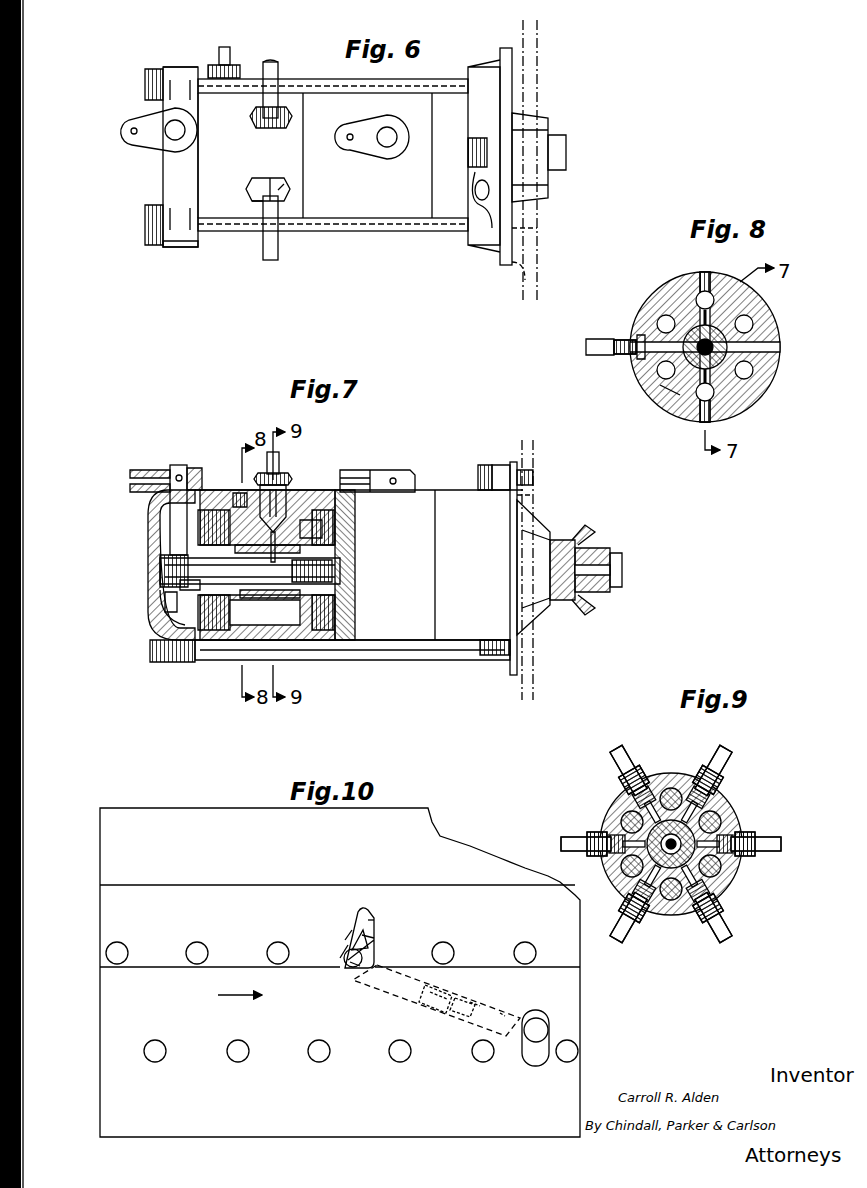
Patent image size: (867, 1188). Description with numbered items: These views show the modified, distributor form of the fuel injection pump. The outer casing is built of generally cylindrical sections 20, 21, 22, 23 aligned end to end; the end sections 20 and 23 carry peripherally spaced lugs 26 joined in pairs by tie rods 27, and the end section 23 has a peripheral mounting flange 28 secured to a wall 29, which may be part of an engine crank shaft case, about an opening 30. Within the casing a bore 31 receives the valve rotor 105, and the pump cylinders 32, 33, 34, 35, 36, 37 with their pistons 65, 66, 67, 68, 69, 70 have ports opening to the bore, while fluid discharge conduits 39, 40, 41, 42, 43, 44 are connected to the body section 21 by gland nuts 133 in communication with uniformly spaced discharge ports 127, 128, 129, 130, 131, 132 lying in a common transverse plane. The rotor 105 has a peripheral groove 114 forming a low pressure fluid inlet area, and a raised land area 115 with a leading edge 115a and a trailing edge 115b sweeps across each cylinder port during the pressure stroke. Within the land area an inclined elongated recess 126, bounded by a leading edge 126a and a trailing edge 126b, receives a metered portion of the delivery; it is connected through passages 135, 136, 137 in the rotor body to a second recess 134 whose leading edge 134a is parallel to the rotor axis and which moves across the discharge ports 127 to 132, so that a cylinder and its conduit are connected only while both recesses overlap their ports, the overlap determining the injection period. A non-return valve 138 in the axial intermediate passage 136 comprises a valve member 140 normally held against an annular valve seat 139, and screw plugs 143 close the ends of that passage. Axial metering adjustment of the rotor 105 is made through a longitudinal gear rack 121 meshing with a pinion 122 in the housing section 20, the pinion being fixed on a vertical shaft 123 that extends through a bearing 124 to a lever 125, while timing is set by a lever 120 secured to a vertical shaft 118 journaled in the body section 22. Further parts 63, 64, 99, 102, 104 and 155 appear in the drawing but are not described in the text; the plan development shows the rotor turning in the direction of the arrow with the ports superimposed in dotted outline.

In FIG. 6, the end casing section 20 is at (150, 163).
In FIG. 7, the end casing section 20 is at (152, 608).
In FIG. 6, the body section 21 is at (237, 210).
In FIG. 8, the body section 21 is at (760, 305).
In FIG. 7, the body section 21 is at (330, 635).
In FIG. 9, the body section 21 is at (730, 885).
In FIG. 6, the body section 22 is at (372, 208).
In FIG. 7, the body section 22 is at (400, 630).
In FIG. 6, the end casing section 23 is at (455, 208).
In FIG. 7, the end casing section 23 is at (458, 500).
In FIG. 6, the lugs 26 is at (185, 247).
In FIG. 7, the lugs 26 is at (175, 662).
In FIG. 6, the tie rods 27 is at (430, 78).
In FIG. 7, the tie rods 27 is at (210, 662).
In FIG. 6, the peripheral mounting flange 28 is at (503, 252).
In FIG. 7, the peripheral mounting flange 28 is at (500, 462).
In FIG. 6, the wall 29 is at (512, 282).
In FIG. 7, the wall 29 is at (522, 440).
In FIG. 6, the opening 30 is at (525, 233).
In FIG. 7, the opening 30 is at (535, 500).
In FIG. 8, the bore 31 is at (705, 370).
In FIG. 7, the bore 31 is at (265, 611).
In FIG. 8, the pump cylinder 32 is at (705, 392).
In FIG. 8, the pump cylinder 33 is at (755, 359).
In FIG. 8, the pump cylinder 34 is at (743, 315).
In FIG. 8, the pump cylinder 35 is at (714, 293).
In FIG. 8, the pump cylinder 36 is at (673, 319).
In FIG. 8, the pump cylinder 37 is at (683, 398).
In FIG. 6, the fluid discharge conduit 39 is at (263, 250).
In FIG. 7, the fluid discharge conduit 39 is at (279, 462).
In FIG. 9, the fluid discharge conduit 39 is at (735, 758).
In FIG. 6, the fluid discharge conduit 40 is at (278, 72).
In FIG. 9, the fluid discharge conduit 40 is at (625, 752).
In FIG. 9, the fluid discharge conduit 41 is at (570, 838).
In FIG. 9, the fluid discharge conduit 42 is at (628, 935).
In FIG. 9, the fluid discharge conduit 43 is at (730, 925).
In FIG. 9, the fluid discharge conduit 44 is at (775, 842).
In FIG. 6, the screw 63 is at (230, 50).
In FIG. 8, the screw 63 is at (600, 356).
In FIG. 6, the nut 64 is at (240, 70).
In FIG. 8, the nut 64 is at (622, 358).
In FIG. 9, the pump piston 65 is at (671, 896).
In FIG. 9, the pump piston 66 is at (717, 870).
In FIG. 9, the pump piston 67 is at (718, 822).
In FIG. 9, the pump piston 68 is at (671, 793).
In FIG. 9, the pump piston 69 is at (623, 822).
In FIG. 9, the pump piston 70 is at (612, 871).
In FIG. 6, the shaft 99 is at (545, 190).
In FIG. 7, the shaft 99 is at (540, 535).
In FIG. 6, the shaft end 102 is at (566, 160).
In FIG. 7, the shaft end 102 is at (590, 570).
In FIG. 7, the collar 104 is at (592, 530).
In FIG. 8, the valve rotor 105 is at (719, 347).
In FIG. 9, the valve rotor 105 is at (671, 844).
In FIG. 10, the valve rotor 105 is at (432, 840).
In FIG. 10, the peripheral groove 114 is at (455, 903).
In FIG. 8, the raised land area 115 is at (722, 378).
In FIG. 10, the raised land area 115 is at (365, 908).
In FIG. 10, the leading edge of land area 115a is at (375, 918).
In FIG. 10, the trailing edge of land area 115b is at (345, 948).
In FIG. 6, the vertical shaft 118 is at (387, 147).
In FIG. 6, the lever 120 is at (367, 145).
In FIG. 7, the lever 120 is at (378, 470).
In FIG. 7, the longitudinal gear rack 121 is at (172, 592).
In FIG. 7, the pinion 122 is at (165, 612).
In FIG. 6, the vertical shaft 123 is at (185, 130).
In FIG. 7, the vertical shaft 123 is at (180, 462).
In FIG. 7, the bearing 124 is at (162, 495).
In FIG. 6, the lever 125 is at (148, 140).
In FIG. 7, the lever 125 is at (160, 466).
In FIG. 10, the recess 126 is at (375, 936).
In FIG. 10, the leading edge of recess 126a is at (362, 955).
In FIG. 10, the trailing edge of recess 126b is at (352, 928).
In FIG. 10, the discharge port 127 is at (562, 1062).
In FIG. 10, the discharge port 128 is at (162, 1060).
In FIG. 10, the discharge port 129 is at (246, 1059).
In FIG. 10, the discharge port 130 is at (326, 1060).
In FIG. 10, the discharge port 131 is at (406, 1060).
In FIG. 10, the discharge port 132 is at (476, 1062).
In FIG. 6, the gland nuts 133 is at (254, 117).
In FIG. 9, the gland nuts 133 is at (725, 780).
In FIG. 7, the recess 134 is at (310, 529).
In FIG. 10, the recess 134 is at (530, 1062).
In FIG. 10, the leading edge of recess 134a is at (548, 1028).
In FIG. 10, the passage 135 is at (365, 978).
In FIG. 7, the intermediate passage 136 is at (267, 551).
In FIG. 8, the passage 137 is at (724, 322).
In FIG. 10, the passage 137 is at (522, 1012).
In FIG. 7, the non-return valve 138 is at (332, 575).
In FIG. 10, the non-return valve 138 is at (485, 983).
In FIG. 10, the annular valve seat 139 is at (440, 1020).
In FIG. 7, the valve member 140 is at (270, 588).
In FIG. 10, the valve member 140 is at (440, 1012).
In FIG. 7, the screw plugs 143 is at (160, 570).
In FIG. 7, the packing nut 155 is at (290, 480).